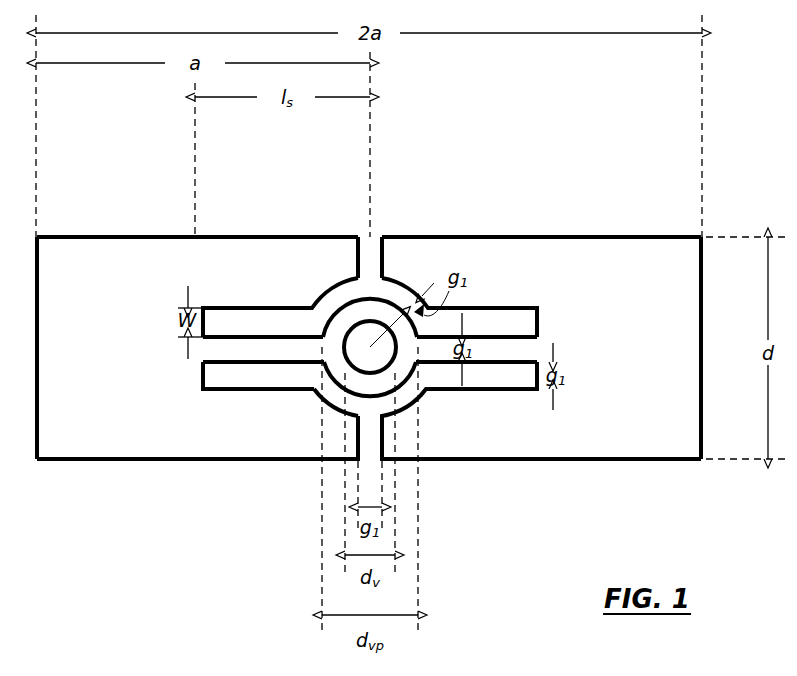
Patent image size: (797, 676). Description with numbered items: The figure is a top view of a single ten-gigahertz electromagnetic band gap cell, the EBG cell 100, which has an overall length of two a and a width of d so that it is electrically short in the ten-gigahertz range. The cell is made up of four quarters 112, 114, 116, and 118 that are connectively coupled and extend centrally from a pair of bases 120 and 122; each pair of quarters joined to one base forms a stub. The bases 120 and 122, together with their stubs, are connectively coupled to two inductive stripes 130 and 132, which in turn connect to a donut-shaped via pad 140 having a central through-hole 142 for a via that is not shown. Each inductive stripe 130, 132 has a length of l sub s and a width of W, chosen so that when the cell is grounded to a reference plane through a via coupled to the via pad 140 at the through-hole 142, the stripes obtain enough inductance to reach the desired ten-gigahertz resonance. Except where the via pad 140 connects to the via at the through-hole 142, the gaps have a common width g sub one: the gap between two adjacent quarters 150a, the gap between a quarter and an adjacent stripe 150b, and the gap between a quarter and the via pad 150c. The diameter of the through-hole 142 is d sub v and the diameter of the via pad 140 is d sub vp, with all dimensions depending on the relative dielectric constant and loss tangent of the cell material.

The EBG cell 100 is at (596, 126).
The quarter 112 is at (497, 268).
The quarter 114 is at (480, 425).
The quarter 116 is at (258, 425).
The quarter 118 is at (260, 270).
The base 120 is at (623, 347).
The base 122 is at (115, 355).
The inductive stripe 130 is at (480, 347).
The inductive stripe 132 is at (268, 348).
The via pad 140 is at (393, 306).
The through-hole 142 is at (366, 343).
The gap between adjacent quarters 150a is at (368, 258).
The gap between quarter and stripe 150b is at (253, 377).
The gap between quarter and via pad 150c is at (337, 400).